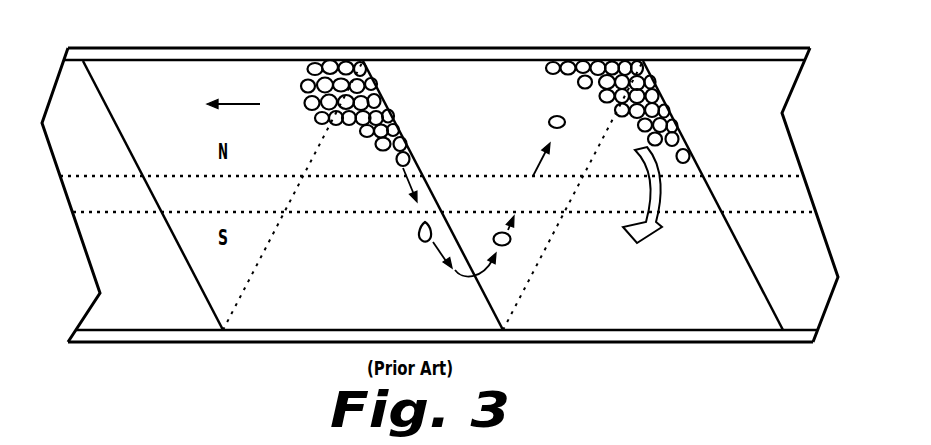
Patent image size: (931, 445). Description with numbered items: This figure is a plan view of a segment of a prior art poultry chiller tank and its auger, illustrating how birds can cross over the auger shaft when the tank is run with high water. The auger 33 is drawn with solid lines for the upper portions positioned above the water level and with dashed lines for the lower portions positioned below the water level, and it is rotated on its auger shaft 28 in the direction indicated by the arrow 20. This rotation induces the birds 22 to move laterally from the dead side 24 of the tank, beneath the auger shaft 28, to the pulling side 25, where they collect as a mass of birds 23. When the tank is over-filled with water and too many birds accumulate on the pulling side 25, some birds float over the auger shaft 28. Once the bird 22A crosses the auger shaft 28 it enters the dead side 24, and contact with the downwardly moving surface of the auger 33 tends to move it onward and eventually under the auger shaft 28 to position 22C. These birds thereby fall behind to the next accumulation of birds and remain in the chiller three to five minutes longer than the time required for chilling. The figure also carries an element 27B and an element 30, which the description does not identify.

The arrow 20 is at (143, 349).
The birds 22 is at (370, 103).
The bird 22A is at (420, 240).
The bird 22C is at (549, 119).
The mass of birds 23 is at (305, 86).
The dead side 24 is at (693, 316).
The pulling side 25 is at (738, 100).
The particle moving upward 27B is at (511, 242).
The auger shaft 28 is at (120, 200).
The particle roll-back direction 30 is at (656, 210).
The auger 33 is at (107, 102).